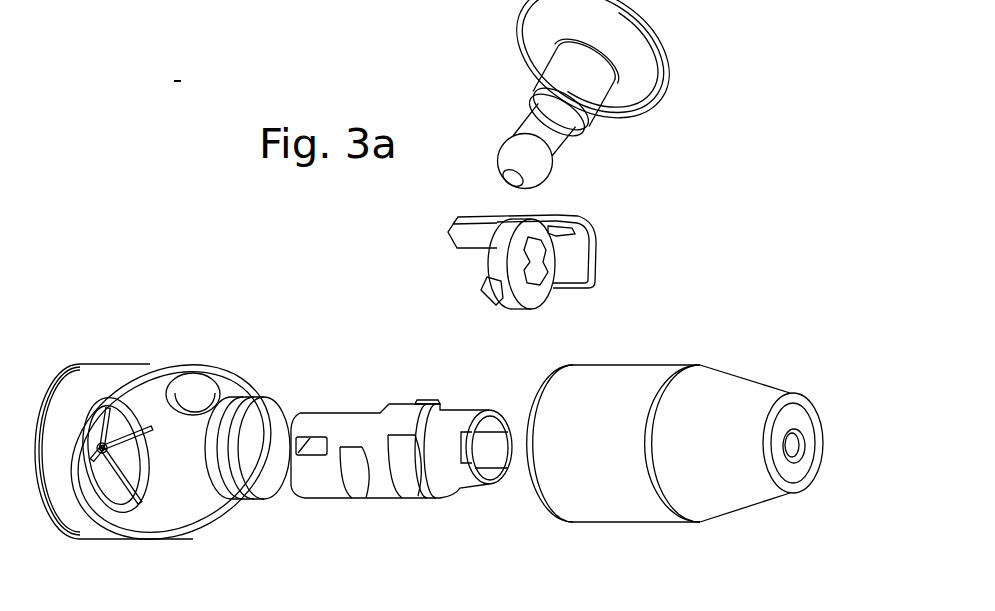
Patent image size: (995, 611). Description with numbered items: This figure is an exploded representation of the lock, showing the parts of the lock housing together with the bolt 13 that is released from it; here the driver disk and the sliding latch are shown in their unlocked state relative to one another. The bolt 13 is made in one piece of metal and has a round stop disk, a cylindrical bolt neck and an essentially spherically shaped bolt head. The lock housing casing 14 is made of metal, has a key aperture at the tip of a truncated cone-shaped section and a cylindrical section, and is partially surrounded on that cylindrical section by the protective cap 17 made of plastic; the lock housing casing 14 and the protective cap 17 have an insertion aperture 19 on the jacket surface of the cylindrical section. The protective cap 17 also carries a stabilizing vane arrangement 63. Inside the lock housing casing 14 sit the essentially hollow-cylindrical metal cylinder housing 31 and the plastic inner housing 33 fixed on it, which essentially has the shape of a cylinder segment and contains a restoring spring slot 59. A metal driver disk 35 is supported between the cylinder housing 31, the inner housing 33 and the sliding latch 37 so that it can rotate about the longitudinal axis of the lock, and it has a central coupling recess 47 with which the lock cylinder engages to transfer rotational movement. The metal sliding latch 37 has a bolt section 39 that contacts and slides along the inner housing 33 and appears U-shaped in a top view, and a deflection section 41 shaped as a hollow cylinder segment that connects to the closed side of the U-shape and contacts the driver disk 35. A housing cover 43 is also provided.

The bolt 13 is at (677, 80).
The lock housing casing 14 is at (704, 390).
The protective cap 17 is at (168, 445).
The insertion aperture 19 is at (196, 390).
The cylinder housing 31 is at (447, 490).
The inner housing 33 is at (401, 455).
The driver disk 35 is at (540, 294).
The sliding latch 37 is at (507, 242).
The bolt section 39 is at (480, 212).
The deflection section 41 is at (560, 213).
The housing cover 43 is at (268, 472).
The central coupling recess 47 is at (547, 270).
The restoring spring slot 59 is at (312, 440).
The stabilizing vane arrangement 63 is at (128, 498).